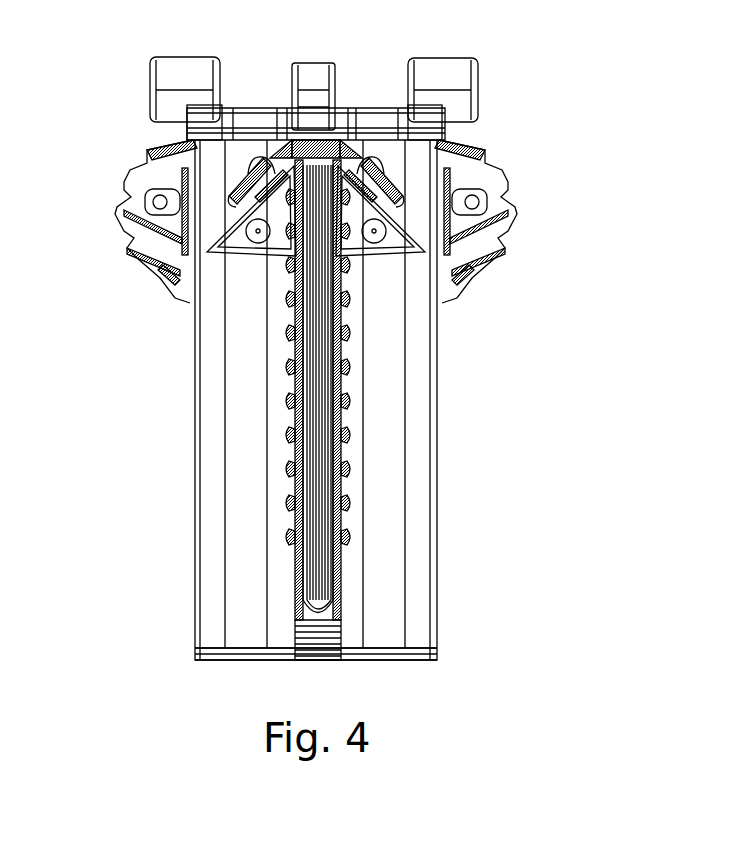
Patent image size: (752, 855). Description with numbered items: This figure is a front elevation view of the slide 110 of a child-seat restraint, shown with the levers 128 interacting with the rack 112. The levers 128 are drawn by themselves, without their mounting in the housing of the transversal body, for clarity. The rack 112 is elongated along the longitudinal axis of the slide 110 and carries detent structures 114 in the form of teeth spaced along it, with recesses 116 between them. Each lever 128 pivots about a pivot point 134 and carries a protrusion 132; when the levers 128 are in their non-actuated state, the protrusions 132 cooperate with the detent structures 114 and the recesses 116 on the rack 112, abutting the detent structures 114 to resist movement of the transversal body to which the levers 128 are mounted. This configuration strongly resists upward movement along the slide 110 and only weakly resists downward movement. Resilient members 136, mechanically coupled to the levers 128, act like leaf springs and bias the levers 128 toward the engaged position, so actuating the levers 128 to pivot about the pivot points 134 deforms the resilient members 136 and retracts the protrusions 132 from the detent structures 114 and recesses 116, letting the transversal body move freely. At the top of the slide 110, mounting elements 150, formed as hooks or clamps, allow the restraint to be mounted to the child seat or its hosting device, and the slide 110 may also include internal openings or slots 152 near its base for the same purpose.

The slide 110 is at (385, 600).
The rack 112 is at (300, 578).
The detent structures 114 is at (293, 452).
The recesses 116 is at (293, 350).
The levers 128 is at (240, 262).
The protrusions 132 is at (283, 182).
The pivot points 134 is at (258, 236).
The resilient members 136 is at (247, 172).
The mounting elements 150 is at (150, 80).
The slots 152 is at (250, 675).